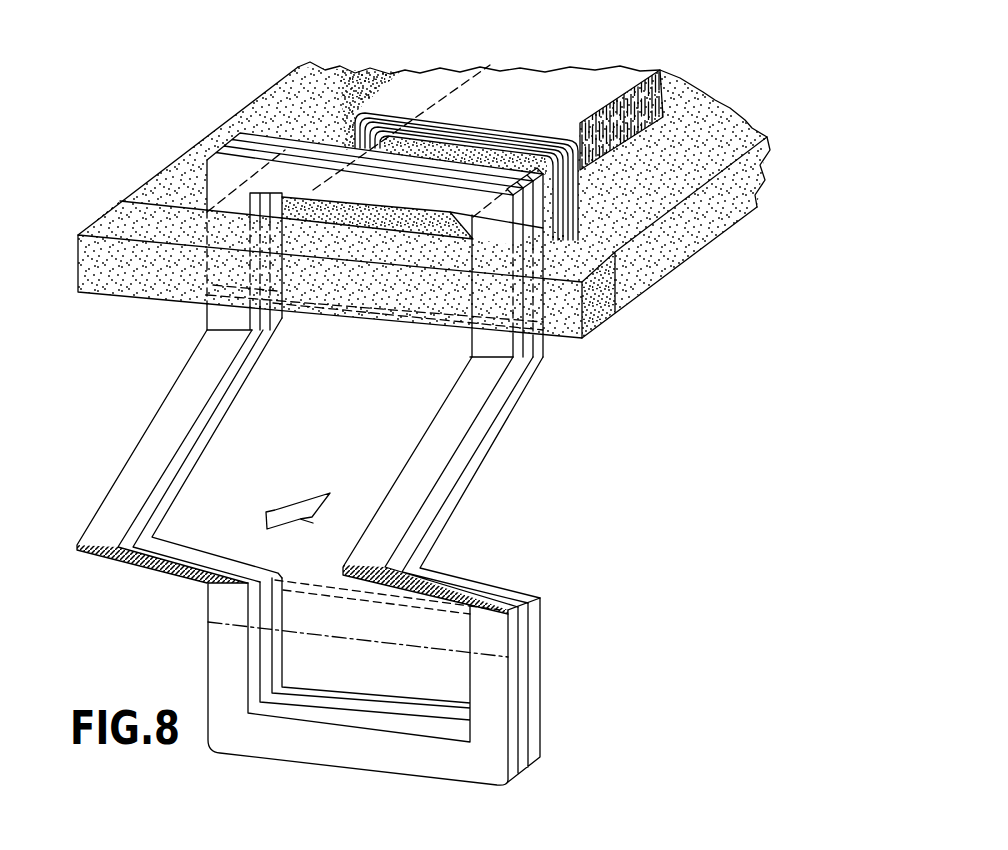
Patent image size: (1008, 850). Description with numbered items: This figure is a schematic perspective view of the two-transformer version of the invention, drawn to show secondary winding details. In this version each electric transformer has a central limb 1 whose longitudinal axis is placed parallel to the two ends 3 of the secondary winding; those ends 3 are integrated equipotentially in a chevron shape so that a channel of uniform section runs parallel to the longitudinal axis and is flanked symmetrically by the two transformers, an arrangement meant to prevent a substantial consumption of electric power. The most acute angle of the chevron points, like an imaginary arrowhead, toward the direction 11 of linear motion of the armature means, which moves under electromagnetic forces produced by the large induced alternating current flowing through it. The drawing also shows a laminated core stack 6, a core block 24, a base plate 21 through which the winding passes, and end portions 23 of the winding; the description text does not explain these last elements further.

The central limb 1 is at (375, 222).
The secondary winding end 3 is at (450, 598).
The laminated core 6 is at (467, 125).
The direction of linear motion 11 is at (296, 508).
The base plate 21 is at (627, 288).
The conductor end portion 23 is at (528, 343).
The core block 24 is at (548, 98).